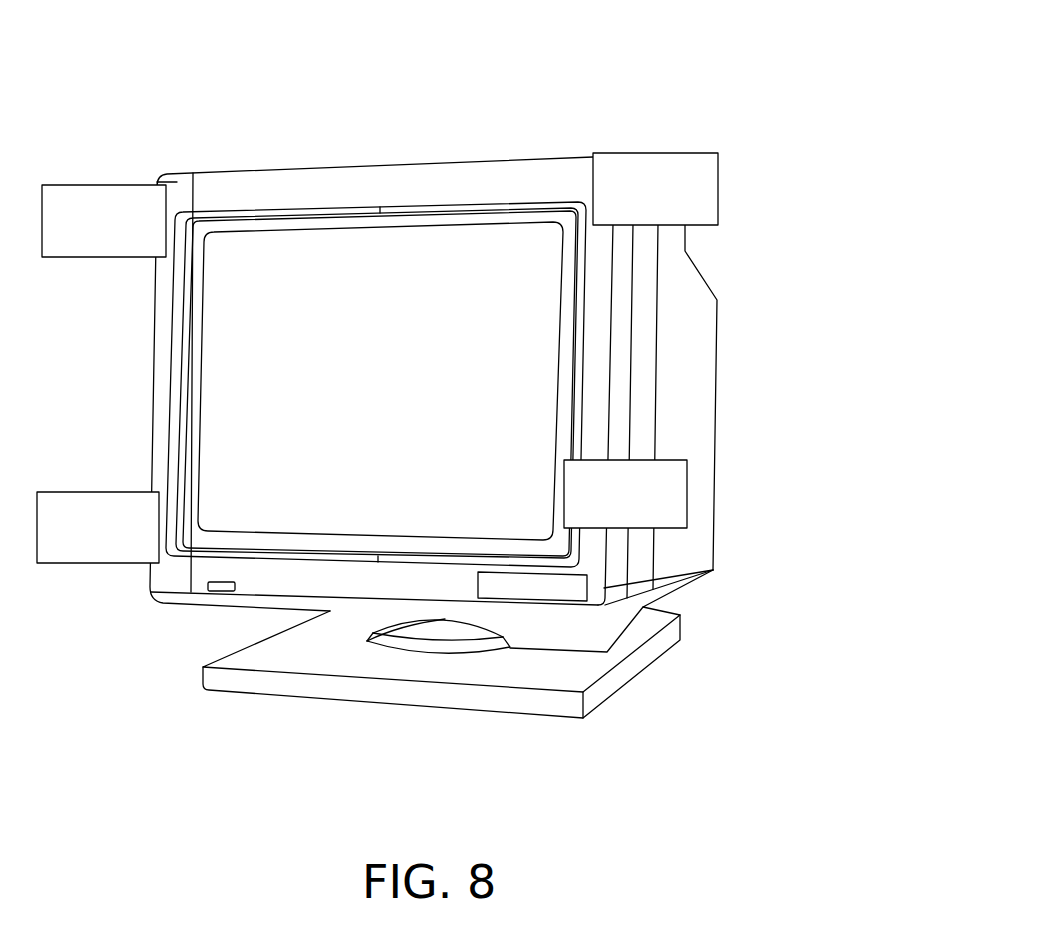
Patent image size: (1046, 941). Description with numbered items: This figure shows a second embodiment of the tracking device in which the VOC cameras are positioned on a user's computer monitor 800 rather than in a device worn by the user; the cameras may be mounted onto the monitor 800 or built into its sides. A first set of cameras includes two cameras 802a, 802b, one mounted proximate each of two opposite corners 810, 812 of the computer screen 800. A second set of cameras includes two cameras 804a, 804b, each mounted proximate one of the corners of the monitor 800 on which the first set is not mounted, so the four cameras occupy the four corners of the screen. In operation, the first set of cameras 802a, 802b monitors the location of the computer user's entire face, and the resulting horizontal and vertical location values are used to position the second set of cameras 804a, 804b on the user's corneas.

The computer monitor 800 is at (380, 182).
The corner of the computer screen 810 is at (175, 182).
The corner of the computer screen 812 is at (713, 572).
The camera 802a is at (104, 221).
The camera 802b is at (625, 494).
The camera 804a is at (655, 189).
The camera 804b is at (98, 527).